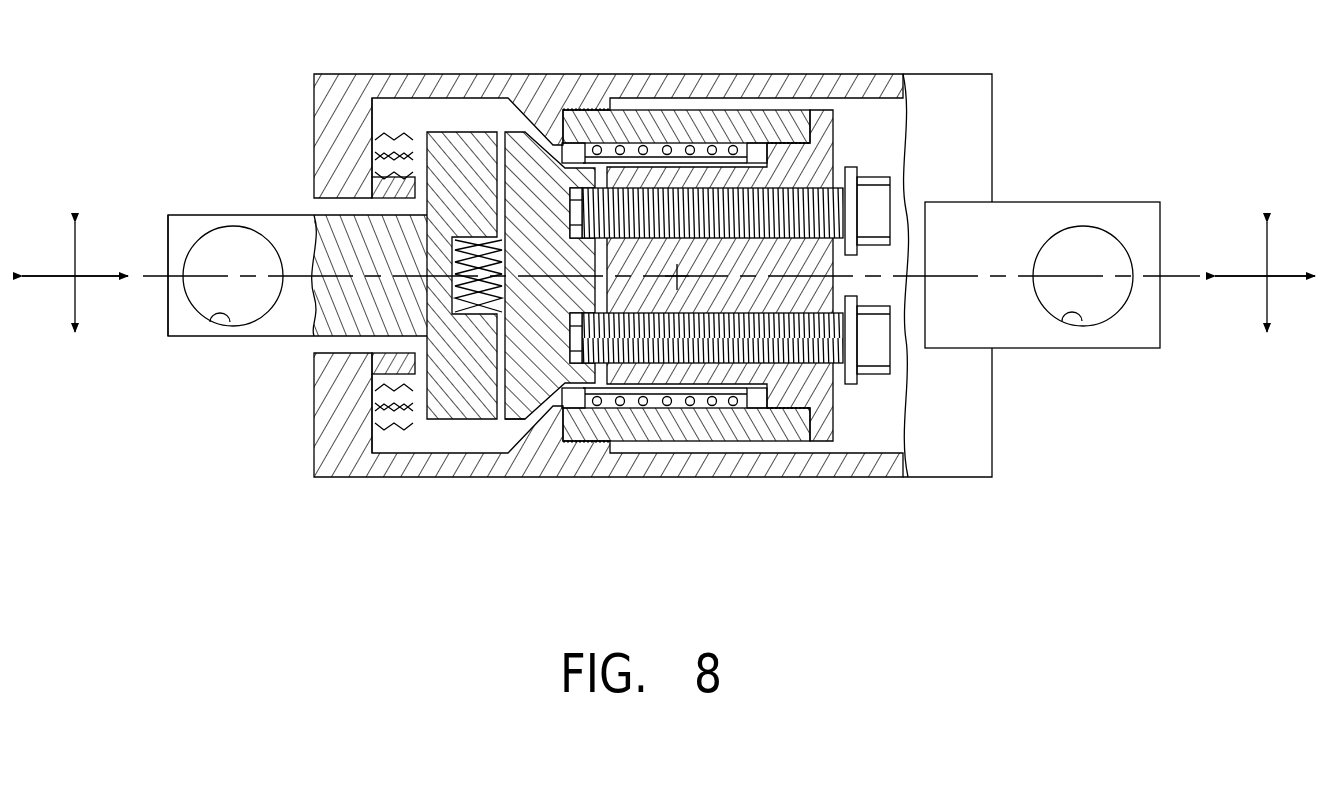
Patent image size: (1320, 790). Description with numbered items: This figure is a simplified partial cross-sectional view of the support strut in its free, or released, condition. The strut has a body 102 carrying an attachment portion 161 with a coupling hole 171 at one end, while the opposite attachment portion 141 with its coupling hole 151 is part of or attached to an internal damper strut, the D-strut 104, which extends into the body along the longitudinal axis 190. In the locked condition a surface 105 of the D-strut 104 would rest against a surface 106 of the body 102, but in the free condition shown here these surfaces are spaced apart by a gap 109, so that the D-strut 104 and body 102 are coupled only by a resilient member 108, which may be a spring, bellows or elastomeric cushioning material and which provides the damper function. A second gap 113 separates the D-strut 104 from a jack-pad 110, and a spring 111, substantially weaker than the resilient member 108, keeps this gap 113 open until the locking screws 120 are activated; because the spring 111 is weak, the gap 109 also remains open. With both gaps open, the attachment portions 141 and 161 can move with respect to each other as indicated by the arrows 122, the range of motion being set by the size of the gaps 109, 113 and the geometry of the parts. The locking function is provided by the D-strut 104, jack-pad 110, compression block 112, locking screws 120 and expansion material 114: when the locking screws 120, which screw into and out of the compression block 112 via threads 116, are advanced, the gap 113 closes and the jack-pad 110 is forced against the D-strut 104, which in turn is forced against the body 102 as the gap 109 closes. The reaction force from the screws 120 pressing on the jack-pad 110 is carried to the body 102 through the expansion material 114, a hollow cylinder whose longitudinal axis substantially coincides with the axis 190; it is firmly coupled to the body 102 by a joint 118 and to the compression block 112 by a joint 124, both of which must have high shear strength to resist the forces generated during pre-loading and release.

The body 102 is at (372, 75).
The internal damper strut 104 is at (313, 313).
The surface 105 is at (421, 182).
The surface 106 is at (397, 190).
The resilient member 108 is at (382, 152).
The gap 109 is at (427, 134).
The jack-pad 110 is at (561, 308).
The spring 111 is at (451, 263).
The compression block 112 is at (818, 145).
The gap 113 is at (489, 419).
The expansion material 114 is at (700, 112).
The threads 116 is at (862, 192).
The joint 118 is at (586, 109).
The locking screws 120 is at (858, 357).
The arrows 122 is at (87, 279).
The joint 124 is at (776, 142).
The attachment portion 141 is at (205, 212).
The coupling hole 151 is at (216, 320).
The attachment portion 161 is at (1067, 212).
The coupling hole 171 is at (1080, 325).
The axis 190 is at (155, 273).